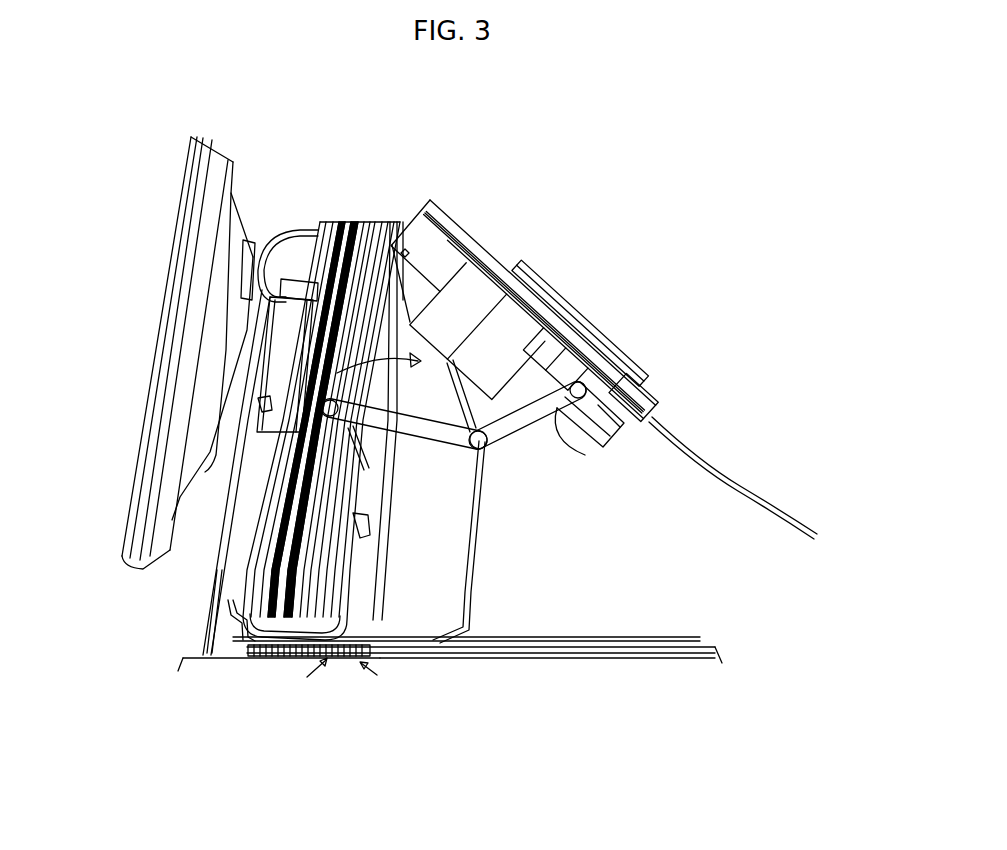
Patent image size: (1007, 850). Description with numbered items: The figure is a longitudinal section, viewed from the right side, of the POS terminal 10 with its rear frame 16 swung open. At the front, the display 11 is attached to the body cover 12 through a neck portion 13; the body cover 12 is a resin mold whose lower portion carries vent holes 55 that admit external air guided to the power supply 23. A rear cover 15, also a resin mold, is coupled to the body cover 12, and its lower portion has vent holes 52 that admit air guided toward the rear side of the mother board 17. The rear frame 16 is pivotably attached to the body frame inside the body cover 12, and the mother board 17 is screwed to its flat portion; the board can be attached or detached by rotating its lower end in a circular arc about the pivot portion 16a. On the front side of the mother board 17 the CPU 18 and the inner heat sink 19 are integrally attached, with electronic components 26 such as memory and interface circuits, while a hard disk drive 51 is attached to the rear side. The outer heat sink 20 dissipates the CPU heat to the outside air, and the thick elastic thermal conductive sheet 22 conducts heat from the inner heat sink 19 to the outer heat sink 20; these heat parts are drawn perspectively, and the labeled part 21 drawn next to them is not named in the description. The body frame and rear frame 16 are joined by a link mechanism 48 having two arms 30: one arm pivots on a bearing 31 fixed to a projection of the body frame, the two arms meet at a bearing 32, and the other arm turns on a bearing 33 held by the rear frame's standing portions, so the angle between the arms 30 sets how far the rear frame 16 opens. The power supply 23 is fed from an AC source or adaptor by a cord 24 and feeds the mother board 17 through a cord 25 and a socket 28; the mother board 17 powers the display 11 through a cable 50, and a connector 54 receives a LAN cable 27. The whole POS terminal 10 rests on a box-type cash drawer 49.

The POS terminal 10 is at (302, 733).
The display 11 is at (180, 193).
The body cover 12 is at (348, 222).
The neck portion 13 is at (252, 313).
The rear cover 15 is at (487, 473).
The rear frame 16 is at (431, 201).
The pivot portion 16a is at (405, 248).
The mother board 17 is at (471, 247).
The CPU 18 is at (500, 300).
The inner heat sink 19 is at (520, 337).
The outer heat sink 20 is at (283, 327).
The fastening member 21 is at (295, 287).
The thermal conductive sheet 22 is at (300, 353).
The power supply 23 is at (235, 605).
The cord 24 is at (347, 660).
The cord 25 is at (347, 622).
The electronic components 26 is at (617, 447).
The LAN cable 27 is at (722, 481).
The socket 28 is at (366, 528).
The arms 30 is at (418, 440).
The bearing 31 is at (363, 465).
The bearing 32 is at (483, 447).
The bearing 33 is at (559, 411).
The link mechanism 48 is at (440, 418).
The cash drawer 49 is at (513, 663).
The cable 50 is at (283, 238).
The hard disk drive 51 is at (617, 350).
The vent holes 52 is at (478, 560).
The connector 54 is at (652, 421).
The vent holes 55 is at (207, 637).